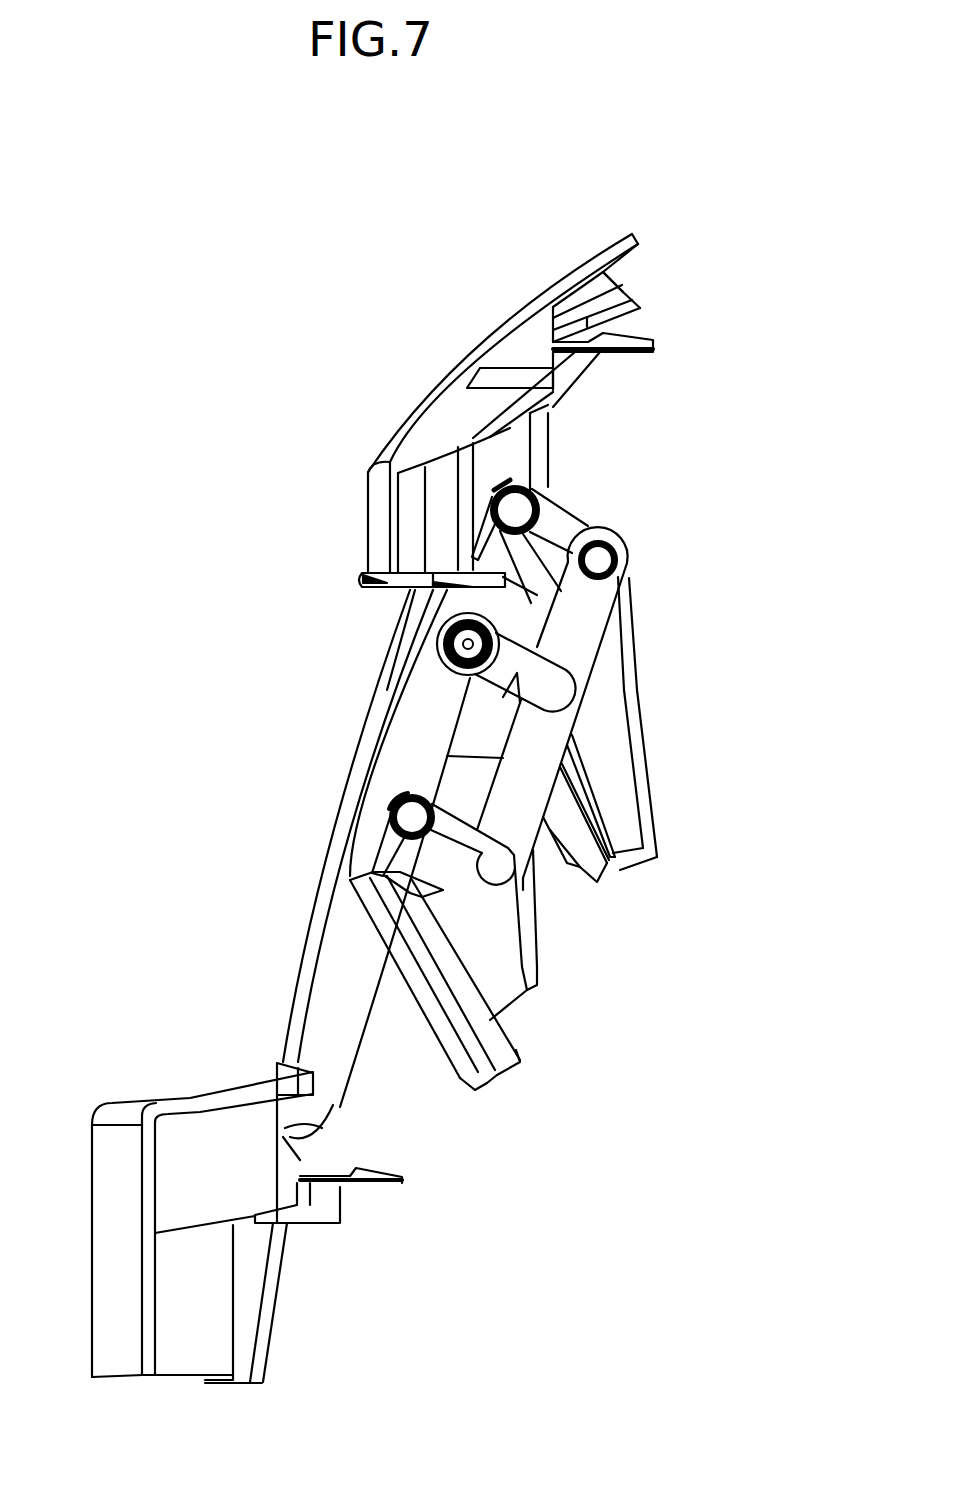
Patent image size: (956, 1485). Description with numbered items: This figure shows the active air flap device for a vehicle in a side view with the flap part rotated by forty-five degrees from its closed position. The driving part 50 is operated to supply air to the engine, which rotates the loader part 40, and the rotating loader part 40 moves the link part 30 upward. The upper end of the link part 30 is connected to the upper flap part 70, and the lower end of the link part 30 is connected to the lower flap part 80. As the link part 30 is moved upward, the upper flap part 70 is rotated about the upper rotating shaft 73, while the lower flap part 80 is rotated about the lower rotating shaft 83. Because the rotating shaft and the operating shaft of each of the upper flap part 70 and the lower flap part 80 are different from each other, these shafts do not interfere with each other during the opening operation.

The link part 30 is at (527, 832).
The loader part 40 is at (537, 673).
The driving part 50 is at (448, 630).
The upper flap part 70 is at (580, 516).
The upper rotating shaft 73 is at (510, 500).
The lower flap part 80 is at (540, 1003).
The lower rotating shaft 83 is at (405, 818).